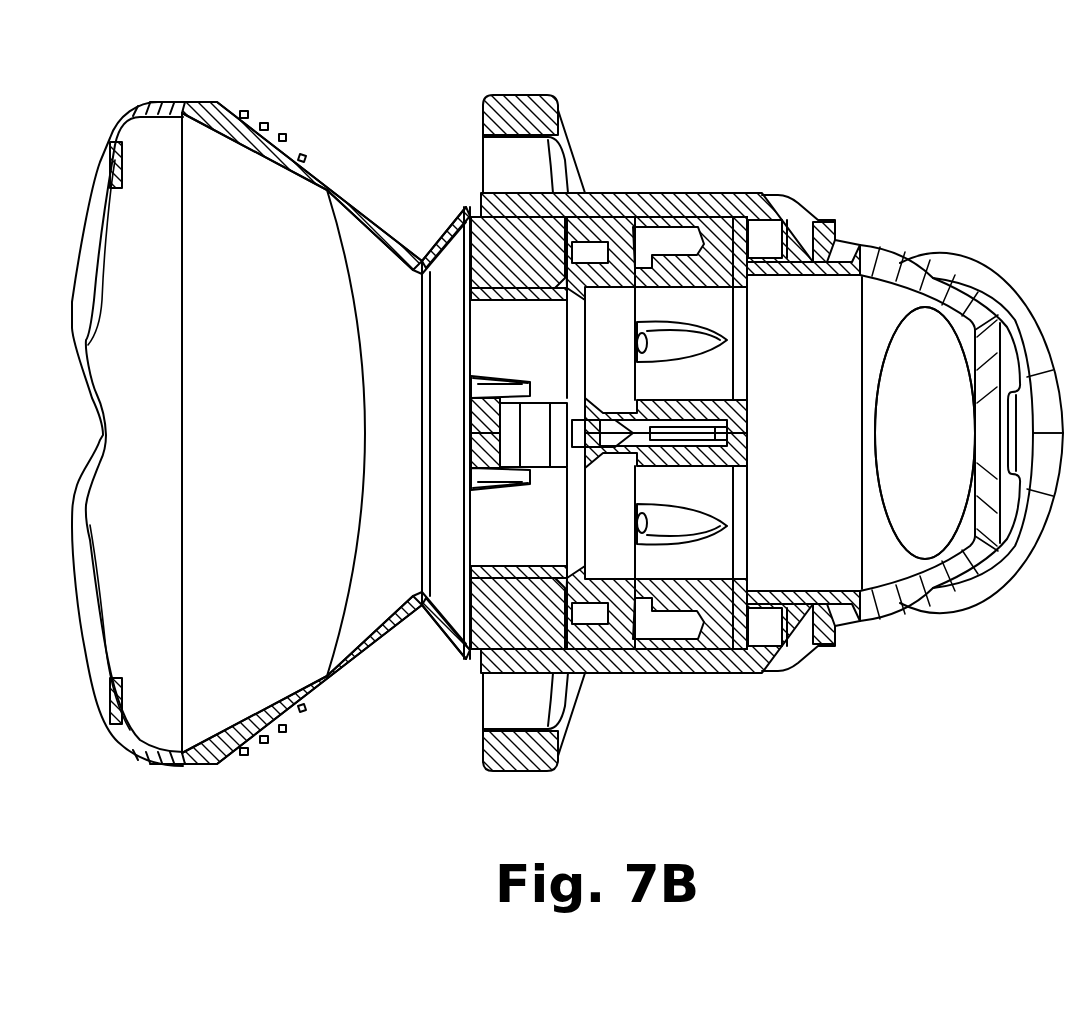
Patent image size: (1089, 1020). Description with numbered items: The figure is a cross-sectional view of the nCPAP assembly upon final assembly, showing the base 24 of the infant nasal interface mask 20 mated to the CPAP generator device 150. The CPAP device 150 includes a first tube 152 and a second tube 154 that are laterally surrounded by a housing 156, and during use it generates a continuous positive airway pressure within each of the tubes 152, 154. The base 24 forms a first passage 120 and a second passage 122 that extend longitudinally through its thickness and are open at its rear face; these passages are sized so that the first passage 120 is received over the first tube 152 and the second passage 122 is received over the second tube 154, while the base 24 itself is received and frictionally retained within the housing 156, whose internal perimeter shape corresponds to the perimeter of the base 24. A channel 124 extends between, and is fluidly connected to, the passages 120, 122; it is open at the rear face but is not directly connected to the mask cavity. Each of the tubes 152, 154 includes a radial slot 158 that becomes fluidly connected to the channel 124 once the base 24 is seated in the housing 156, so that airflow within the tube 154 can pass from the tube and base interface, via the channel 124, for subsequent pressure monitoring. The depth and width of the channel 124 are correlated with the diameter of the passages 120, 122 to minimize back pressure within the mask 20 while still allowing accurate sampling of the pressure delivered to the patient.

The infant nasal interface mask 20 is at (256, 92).
The base 24 is at (489, 236).
The first passage 120 is at (487, 266).
The second passage 122 is at (479, 596).
The channel 124 is at (520, 440).
The CPAP generator device 150 is at (782, 184).
The first tube 152 is at (489, 306).
The second tube 154 is at (486, 556).
The housing 156 is at (598, 192).
The radial slot 158 is at (490, 388).